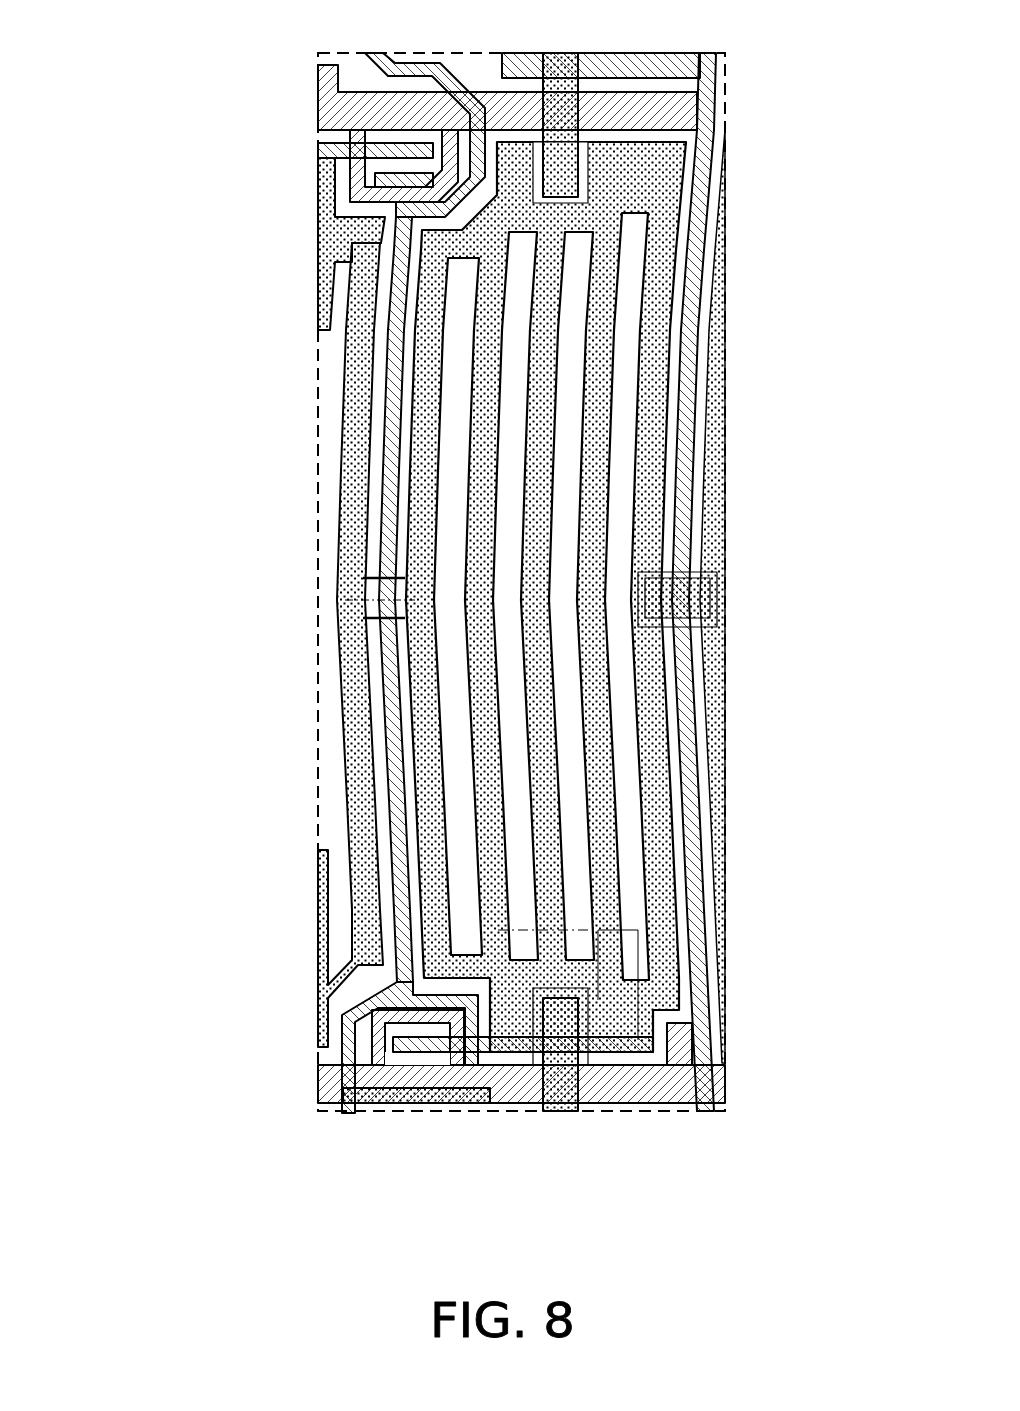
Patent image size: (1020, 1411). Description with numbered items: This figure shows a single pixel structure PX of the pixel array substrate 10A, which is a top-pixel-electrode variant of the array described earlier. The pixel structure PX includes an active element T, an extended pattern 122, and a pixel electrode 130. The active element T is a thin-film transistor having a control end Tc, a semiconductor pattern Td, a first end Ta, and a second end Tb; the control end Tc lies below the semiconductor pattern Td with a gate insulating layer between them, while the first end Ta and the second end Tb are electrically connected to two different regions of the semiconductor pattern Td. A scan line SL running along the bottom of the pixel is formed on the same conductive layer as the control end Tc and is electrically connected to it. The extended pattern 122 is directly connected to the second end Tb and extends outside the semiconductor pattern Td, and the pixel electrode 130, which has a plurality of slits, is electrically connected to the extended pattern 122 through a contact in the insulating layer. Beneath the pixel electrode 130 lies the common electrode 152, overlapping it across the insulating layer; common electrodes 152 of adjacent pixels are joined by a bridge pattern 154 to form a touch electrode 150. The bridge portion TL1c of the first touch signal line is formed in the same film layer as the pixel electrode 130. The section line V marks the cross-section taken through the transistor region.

The pixel PX is at (112, 16).
The pixel array substrate 10A is at (862, 1229).
The thin film transistor T is at (385, 625).
The source/drain electrode (conductive layer) 122 is at (480, 1048).
The pixel electrode 130 is at (655, 812).
The data line structure 150 is at (325, 583).
The data line 152 is at (405, 690).
The connecting electrode 154 is at (365, 620).
The scan line SL is at (330, 1085).
The touch line TL1c is at (375, 1085).
The channel layer of transistor Tc is at (385, 1090).
The gate of transistor Ta is at (430, 1080).
The drain of transistor Td is at (456, 1075).
The source of transistor Tb is at (385, 622).
The section line V-V' V is at (512, 1028).